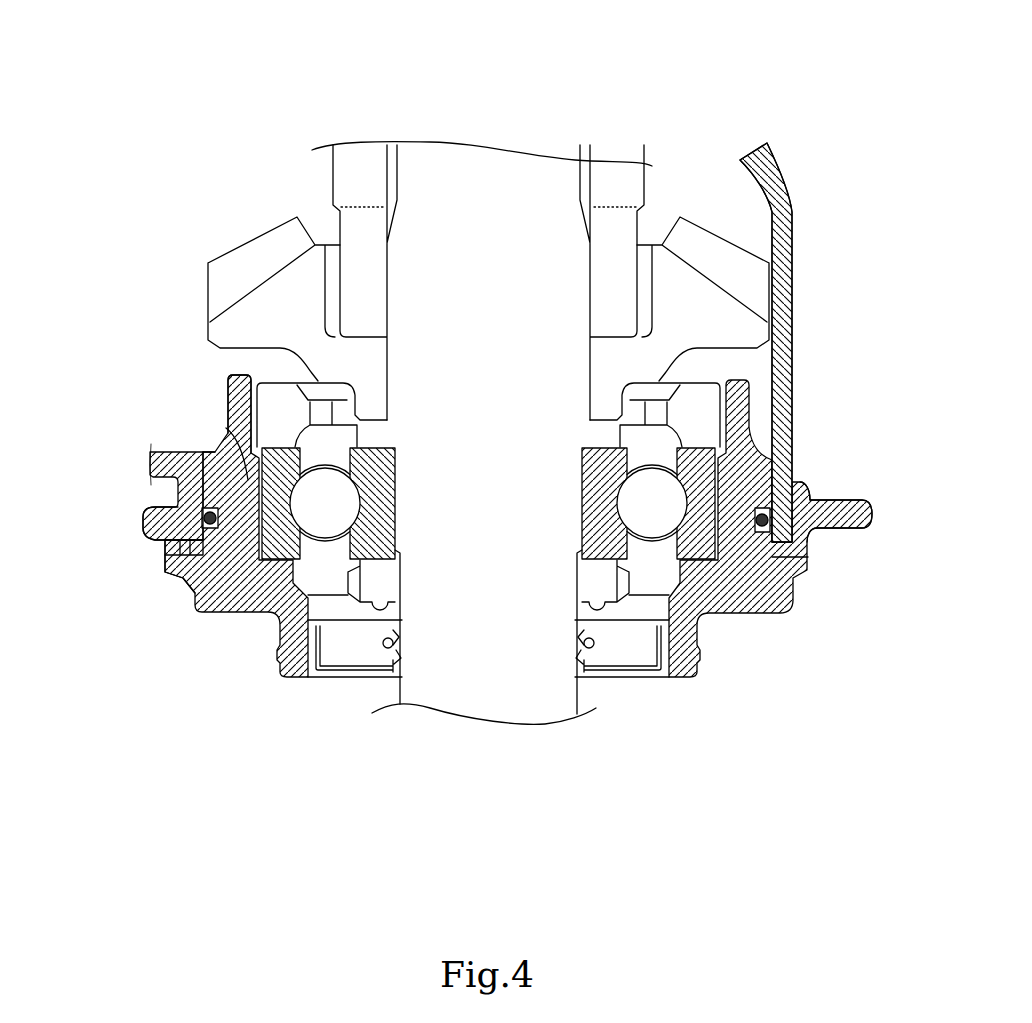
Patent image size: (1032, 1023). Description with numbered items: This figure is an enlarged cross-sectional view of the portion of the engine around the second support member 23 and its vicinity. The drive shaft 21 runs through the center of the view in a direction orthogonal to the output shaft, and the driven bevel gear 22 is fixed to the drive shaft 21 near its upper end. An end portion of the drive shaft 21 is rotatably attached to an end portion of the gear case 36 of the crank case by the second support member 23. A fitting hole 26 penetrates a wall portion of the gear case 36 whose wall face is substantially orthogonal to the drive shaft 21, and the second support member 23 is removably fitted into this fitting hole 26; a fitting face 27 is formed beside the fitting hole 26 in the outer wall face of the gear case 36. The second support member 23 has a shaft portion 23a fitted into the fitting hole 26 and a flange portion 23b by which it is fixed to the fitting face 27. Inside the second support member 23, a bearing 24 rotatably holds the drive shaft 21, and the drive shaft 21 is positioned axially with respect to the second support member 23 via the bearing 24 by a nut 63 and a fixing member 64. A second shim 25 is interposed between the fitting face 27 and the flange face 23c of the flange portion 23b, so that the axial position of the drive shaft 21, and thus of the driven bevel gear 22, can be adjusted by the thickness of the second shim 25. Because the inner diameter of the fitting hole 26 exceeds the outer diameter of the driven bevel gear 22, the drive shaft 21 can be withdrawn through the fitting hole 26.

The drive shaft 21 is at (493, 195).
The driven bevel gear 22 is at (705, 257).
The second support member 23 is at (277, 636).
The shaft portion 23a is at (227, 437).
The flange portion 23b is at (175, 568).
The flange face 23c is at (152, 527).
The bearing 24 is at (700, 503).
The second shim 25 is at (813, 546).
The fitting hole 26 is at (215, 450).
The fitting face 27 is at (185, 578).
The gear case 36 is at (790, 286).
The nut 63 is at (602, 592).
The fixing member 64 is at (692, 395).